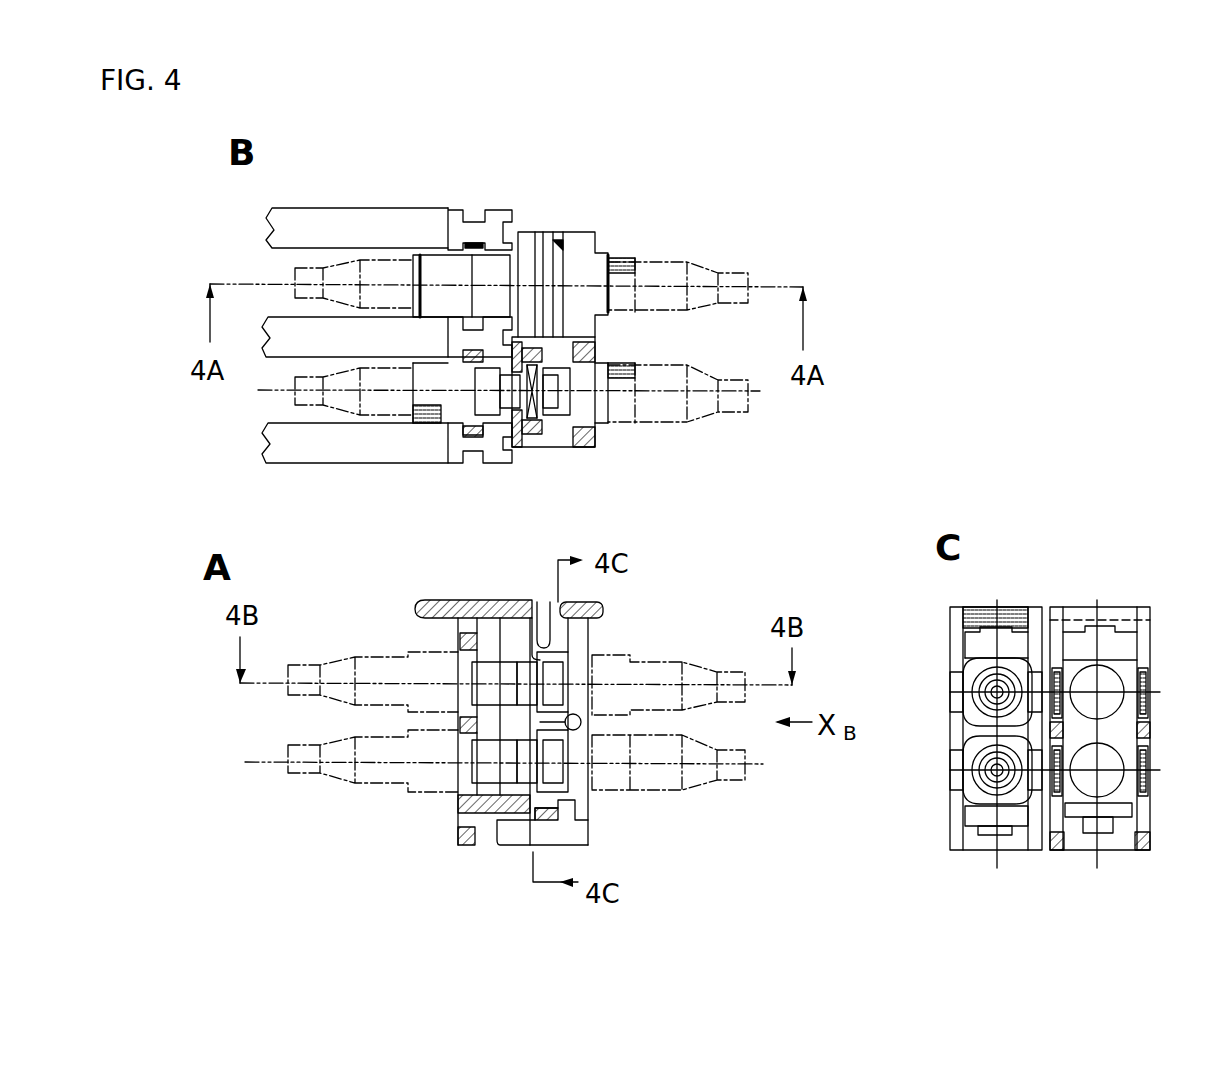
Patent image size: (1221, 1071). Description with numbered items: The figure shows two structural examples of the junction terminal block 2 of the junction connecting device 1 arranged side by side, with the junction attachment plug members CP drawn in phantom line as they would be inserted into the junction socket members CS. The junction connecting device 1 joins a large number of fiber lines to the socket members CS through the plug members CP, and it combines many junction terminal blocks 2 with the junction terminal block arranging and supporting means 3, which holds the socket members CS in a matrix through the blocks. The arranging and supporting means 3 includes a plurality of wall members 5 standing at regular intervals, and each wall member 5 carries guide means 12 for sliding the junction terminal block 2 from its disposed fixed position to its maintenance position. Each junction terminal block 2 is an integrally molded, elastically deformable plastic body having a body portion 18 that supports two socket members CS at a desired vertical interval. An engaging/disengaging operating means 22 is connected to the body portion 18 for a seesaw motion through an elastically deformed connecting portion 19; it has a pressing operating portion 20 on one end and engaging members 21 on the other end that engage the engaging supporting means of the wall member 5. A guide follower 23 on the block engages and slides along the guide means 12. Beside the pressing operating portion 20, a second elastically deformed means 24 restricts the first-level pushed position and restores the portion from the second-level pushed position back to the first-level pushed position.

The junction connecting device 1 is at (593, 136).
The junction terminal block 2 is at (553, 230).
The junction terminal block arranging and supporting means 3 is at (505, 208).
The wall member 5 is at (345, 225).
The guide means 12 is at (468, 210).
The body portion 18 is at (458, 642).
The elastically deformed connecting portion 19 is at (568, 728).
The pressing operating portion 20 is at (605, 270).
The engaging member 21 is at (510, 845).
The engaging/disengaging operating means 22 is at (603, 645).
The guide follower 23 is at (466, 845).
The second elastically deformed means 24 is at (548, 605).
The junction attachment plug member CP is at (735, 283).
The junction socket member CS is at (487, 400).